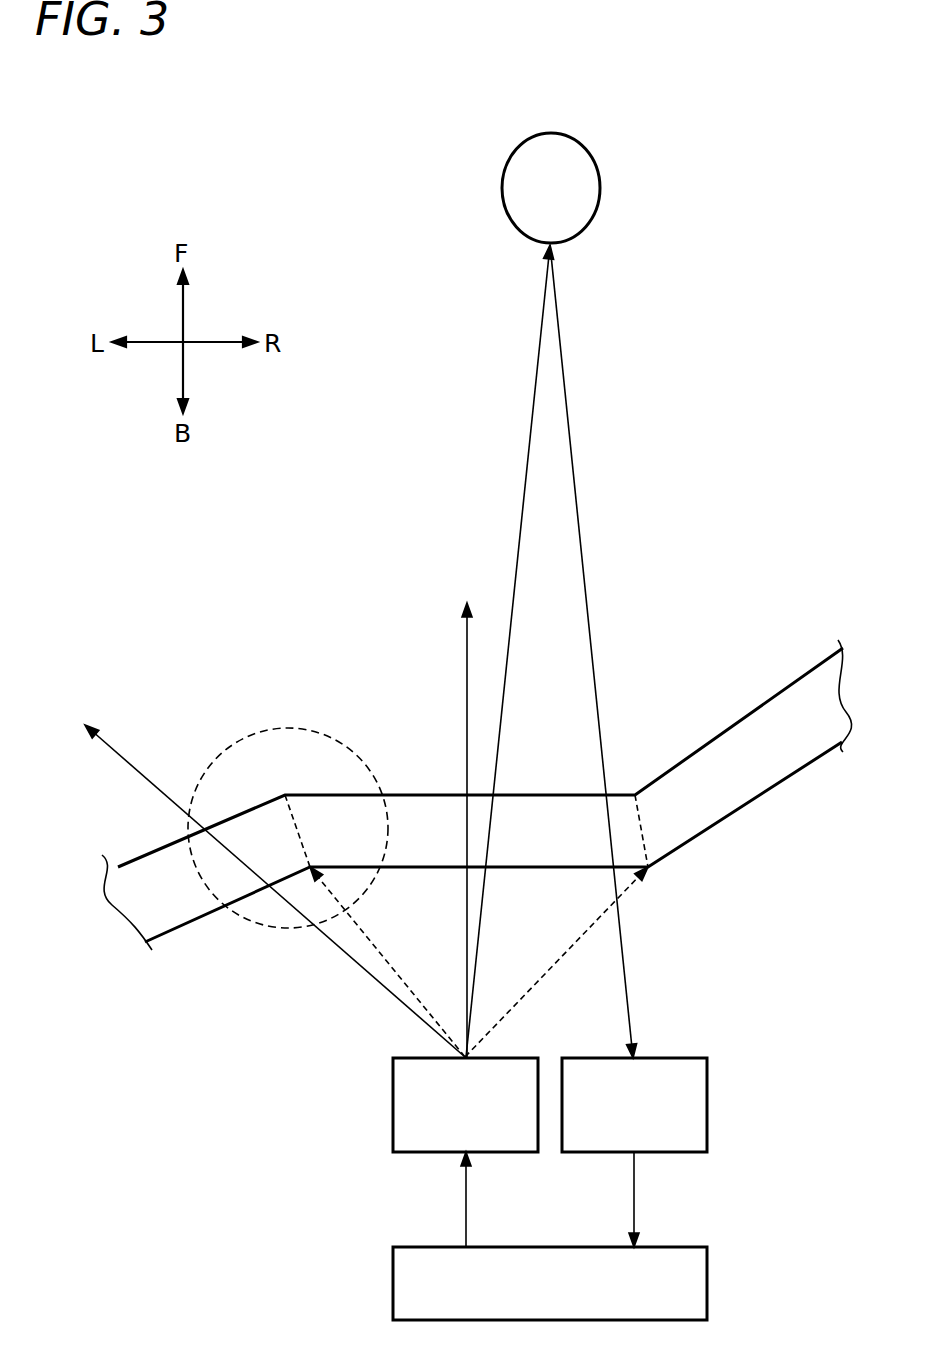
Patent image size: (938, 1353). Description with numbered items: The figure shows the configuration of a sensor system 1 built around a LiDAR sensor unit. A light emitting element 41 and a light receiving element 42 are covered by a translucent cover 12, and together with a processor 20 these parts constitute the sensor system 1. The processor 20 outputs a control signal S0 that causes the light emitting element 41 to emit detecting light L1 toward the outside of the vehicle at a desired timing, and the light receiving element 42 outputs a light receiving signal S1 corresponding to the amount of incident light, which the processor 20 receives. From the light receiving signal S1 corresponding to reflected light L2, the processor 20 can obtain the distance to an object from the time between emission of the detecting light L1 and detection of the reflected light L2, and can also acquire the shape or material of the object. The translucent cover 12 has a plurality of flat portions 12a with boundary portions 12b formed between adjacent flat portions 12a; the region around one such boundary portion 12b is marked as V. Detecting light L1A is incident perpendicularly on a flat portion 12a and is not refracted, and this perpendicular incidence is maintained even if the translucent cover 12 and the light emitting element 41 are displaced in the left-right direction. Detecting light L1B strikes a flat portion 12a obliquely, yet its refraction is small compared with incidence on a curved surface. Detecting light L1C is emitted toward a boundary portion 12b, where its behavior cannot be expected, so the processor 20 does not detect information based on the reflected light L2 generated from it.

The sensor system 1 is at (305, 575).
The translucent cover 12 is at (712, 871).
The flat portion 12a is at (420, 795).
The boundary portion 12b is at (288, 825).
The processor 20 is at (393, 1285).
The light emitting element 41 is at (393, 1103).
The light receiving element 42 is at (707, 1088).
The virtual region V is at (292, 727).
The detecting light L1 is at (525, 482).
The reflected light L2 is at (590, 620).
The detecting light L1A is at (467, 673).
The detecting light L1B is at (340, 945).
The detecting light L1C is at (373, 942).
The control signal S0 is at (466, 1207).
The light receiving signal S1 is at (634, 1190).